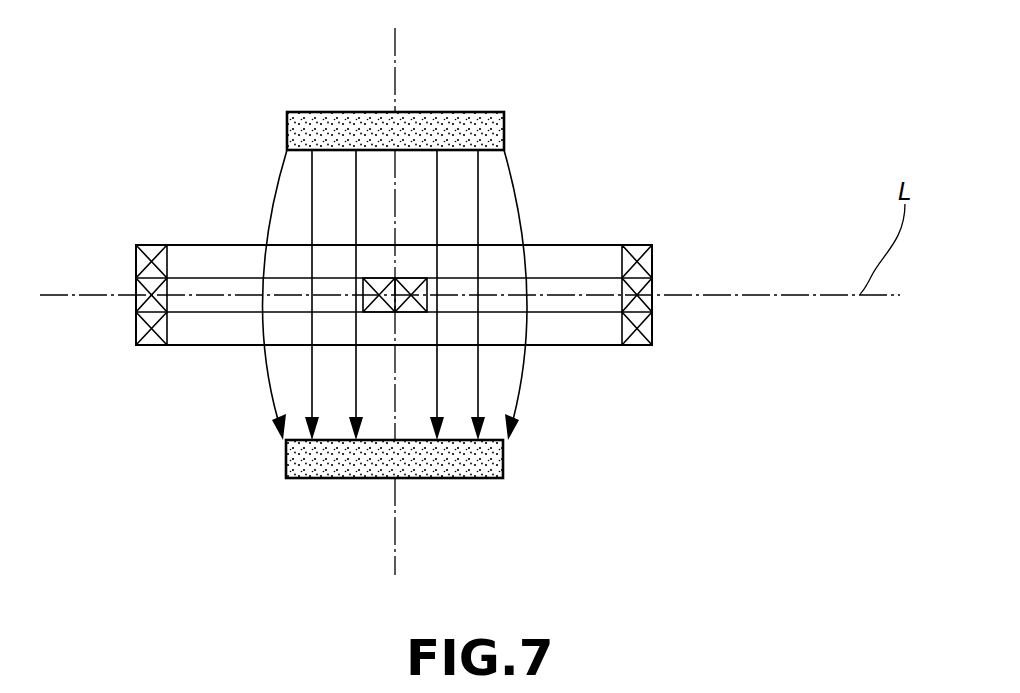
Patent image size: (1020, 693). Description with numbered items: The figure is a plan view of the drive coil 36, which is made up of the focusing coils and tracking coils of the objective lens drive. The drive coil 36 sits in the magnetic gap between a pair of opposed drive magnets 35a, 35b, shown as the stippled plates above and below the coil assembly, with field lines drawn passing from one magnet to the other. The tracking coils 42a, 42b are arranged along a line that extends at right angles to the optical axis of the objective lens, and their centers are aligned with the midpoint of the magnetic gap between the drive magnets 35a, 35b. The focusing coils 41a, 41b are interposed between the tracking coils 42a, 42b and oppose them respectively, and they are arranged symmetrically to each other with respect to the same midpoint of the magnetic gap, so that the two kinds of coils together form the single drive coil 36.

The drive magnet 35a is at (490, 460).
The drive magnet 35b is at (487, 130).
The drive coil 36 is at (443, 325).
The focusing coil 41a is at (645, 330).
The focusing coil 41b is at (655, 265).
The tracking coil 42a is at (140, 298).
The tracking coil 42b is at (655, 287).